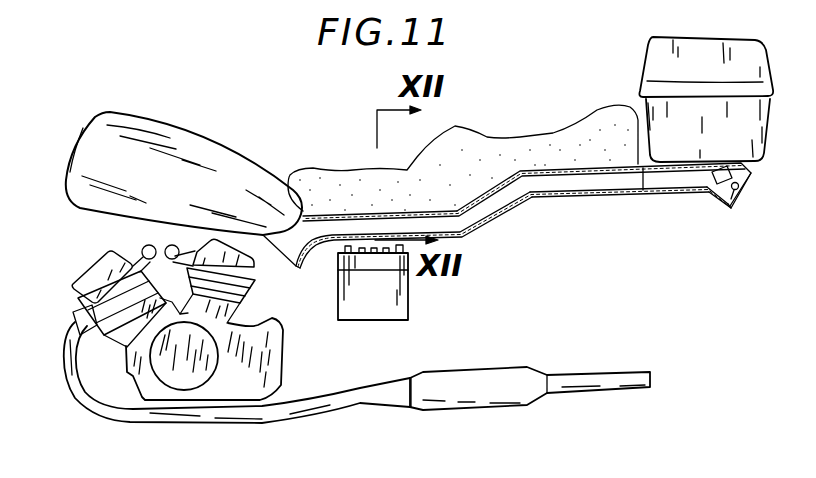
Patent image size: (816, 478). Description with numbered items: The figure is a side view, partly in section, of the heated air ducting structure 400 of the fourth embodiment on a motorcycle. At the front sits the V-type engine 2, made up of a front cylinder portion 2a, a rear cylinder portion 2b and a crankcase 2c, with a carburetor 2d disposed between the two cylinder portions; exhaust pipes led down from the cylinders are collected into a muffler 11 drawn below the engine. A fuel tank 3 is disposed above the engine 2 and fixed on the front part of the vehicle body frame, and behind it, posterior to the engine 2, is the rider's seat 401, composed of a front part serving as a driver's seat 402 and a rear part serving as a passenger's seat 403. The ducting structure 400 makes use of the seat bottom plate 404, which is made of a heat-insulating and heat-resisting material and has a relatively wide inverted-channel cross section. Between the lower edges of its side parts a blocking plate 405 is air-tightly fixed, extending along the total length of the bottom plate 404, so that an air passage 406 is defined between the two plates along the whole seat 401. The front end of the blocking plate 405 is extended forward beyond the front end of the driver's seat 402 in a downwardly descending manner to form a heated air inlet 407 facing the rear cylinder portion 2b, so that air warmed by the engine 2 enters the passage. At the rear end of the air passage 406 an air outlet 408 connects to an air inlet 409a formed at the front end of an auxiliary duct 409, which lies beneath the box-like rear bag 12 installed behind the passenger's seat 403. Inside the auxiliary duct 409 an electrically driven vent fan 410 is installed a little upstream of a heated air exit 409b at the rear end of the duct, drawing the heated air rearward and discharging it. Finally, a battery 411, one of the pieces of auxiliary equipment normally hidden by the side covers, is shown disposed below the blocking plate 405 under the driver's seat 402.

The V-type engine 2 is at (143, 376).
The front cylinder portion 2a is at (82, 281).
The rear cylinder portion 2b is at (221, 262).
The crankcase 2c is at (185, 385).
The carburetor 2d is at (172, 244).
The fuel tank 3 is at (212, 137).
The muffler 11 is at (452, 401).
The rear bag 12 is at (712, 44).
The heated air ducting structure 400 is at (472, 308).
The rider's seat 401 is at (467, 122).
The driver's seat 402 is at (358, 167).
The passenger's seat 403 is at (537, 135).
The seat bottom plate 404 is at (408, 212).
The blocking plate 405 is at (493, 218).
The air passage 406 is at (506, 197).
The heated air inlet 407 is at (289, 268).
The air outlet 408 is at (637, 177).
The auxiliary duct 409 is at (688, 192).
The air inlet 409a is at (663, 203).
The heated air exit 409b is at (736, 207).
The vent fan 410 is at (738, 201).
The battery 411 is at (376, 310).